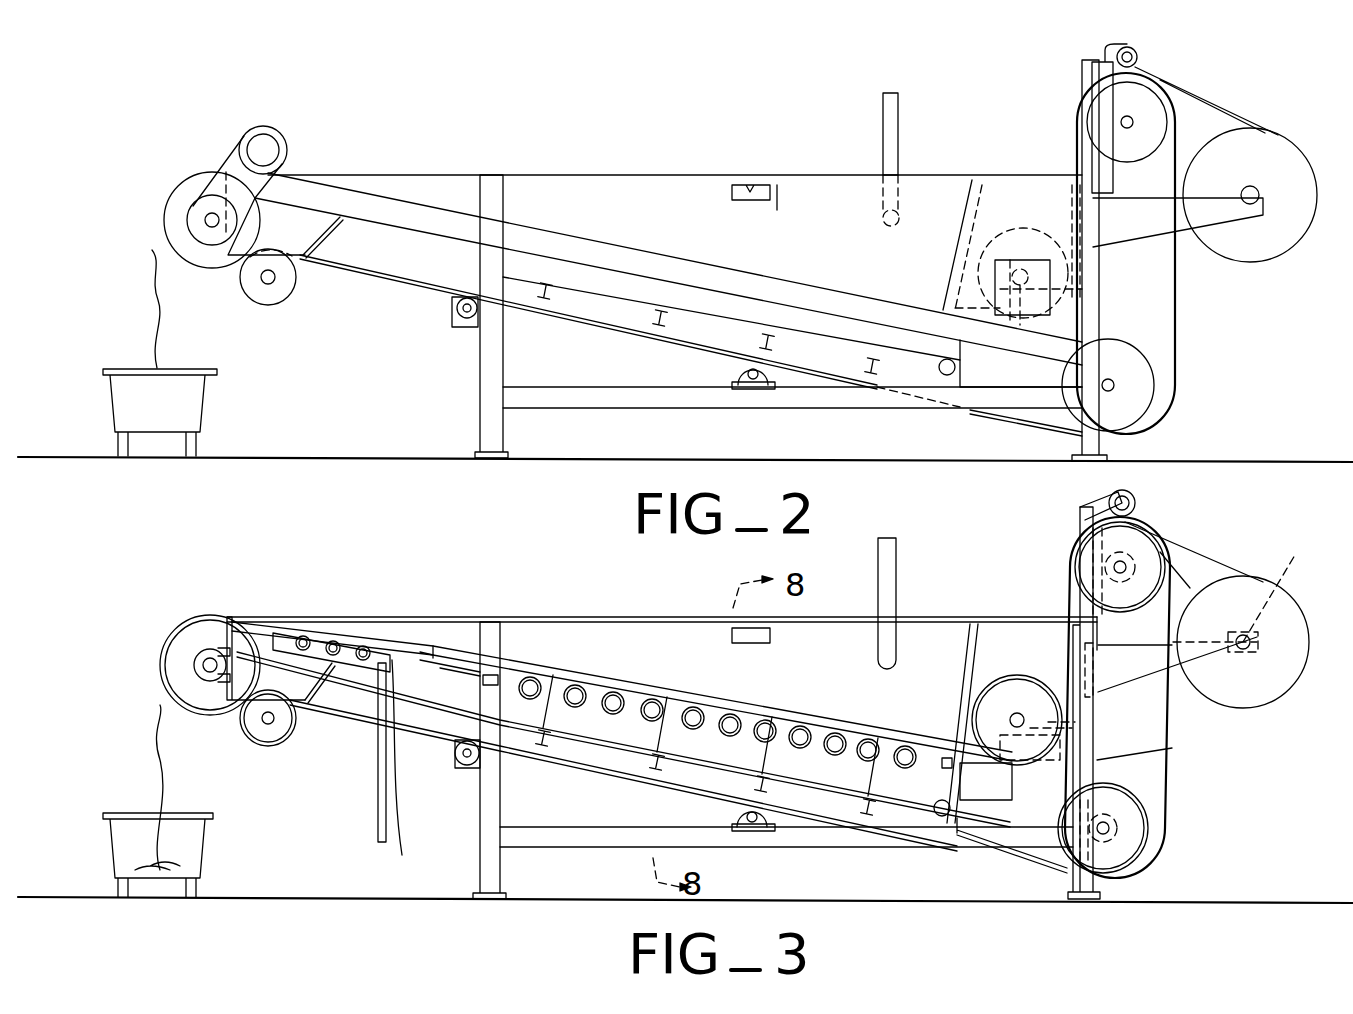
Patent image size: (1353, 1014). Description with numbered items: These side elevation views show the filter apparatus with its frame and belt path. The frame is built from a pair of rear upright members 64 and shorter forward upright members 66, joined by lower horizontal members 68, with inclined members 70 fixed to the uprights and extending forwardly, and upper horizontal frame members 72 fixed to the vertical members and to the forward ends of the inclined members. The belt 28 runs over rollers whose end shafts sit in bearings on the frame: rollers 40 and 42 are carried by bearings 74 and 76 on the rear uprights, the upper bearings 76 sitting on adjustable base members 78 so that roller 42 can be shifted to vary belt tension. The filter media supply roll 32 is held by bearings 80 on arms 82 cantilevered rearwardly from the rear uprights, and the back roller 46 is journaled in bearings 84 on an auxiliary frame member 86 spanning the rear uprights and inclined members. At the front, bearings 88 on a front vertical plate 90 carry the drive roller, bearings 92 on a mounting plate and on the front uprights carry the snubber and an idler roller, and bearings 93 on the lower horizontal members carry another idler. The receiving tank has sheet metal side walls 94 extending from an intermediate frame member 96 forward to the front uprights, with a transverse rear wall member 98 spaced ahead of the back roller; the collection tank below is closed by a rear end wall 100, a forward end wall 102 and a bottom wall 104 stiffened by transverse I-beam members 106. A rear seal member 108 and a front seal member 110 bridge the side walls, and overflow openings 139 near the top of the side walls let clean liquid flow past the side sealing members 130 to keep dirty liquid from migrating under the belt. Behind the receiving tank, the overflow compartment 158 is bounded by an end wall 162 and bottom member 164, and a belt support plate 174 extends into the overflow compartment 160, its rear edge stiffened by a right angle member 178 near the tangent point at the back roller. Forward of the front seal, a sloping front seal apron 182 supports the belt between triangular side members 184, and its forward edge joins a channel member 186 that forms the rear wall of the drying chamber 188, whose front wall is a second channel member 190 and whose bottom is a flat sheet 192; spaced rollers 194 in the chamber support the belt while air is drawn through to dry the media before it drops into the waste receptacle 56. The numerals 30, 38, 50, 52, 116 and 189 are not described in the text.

In FIG. 2, the belt 28 is at (1172, 298).
In FIG. 3, the belt 28 is at (1165, 760).
In FIG. 3, the drive belt 30 is at (1235, 568).
In FIG. 2, the filter media supply roll 32 is at (1300, 245).
In FIG. 3, the filter media supply roll 32 is at (1305, 668).
In FIG. 2, the feed pipe 38 is at (883, 110).
In FIG. 3, the feed pipe 38 is at (896, 588).
In FIG. 3, the roller 40 is at (1133, 822).
In FIG. 3, the roller 42 is at (1152, 558).
In FIG. 3, the back roller 46 is at (1025, 675).
In FIG. 2, the idler pulley 50 is at (275, 130).
In FIG. 2, the swing arm 52 is at (232, 163).
In FIG. 3, the waste receptacle 56 is at (210, 851).
In FIG. 2, the rear upright members 64 is at (1097, 318).
In FIG. 3, the rear upright members 64 is at (1084, 703).
In FIG. 2, the forward upright members 66 is at (478, 375).
In FIG. 3, the forward upright members 66 is at (489, 760).
In FIG. 2, the lower horizontal members 68 is at (596, 398).
In FIG. 3, the lower horizontal members 68 is at (786, 837).
In FIG. 2, the inclined members 70 is at (652, 268).
In FIG. 3, the upper horizontal frame members 72 is at (620, 616).
In FIG. 3, the bearings 74 is at (1152, 855).
In FIG. 3, the bearings 76 is at (1165, 585).
In FIG. 2, the adjustable base members 78 is at (1112, 100).
In FIG. 3, the adjustable base members 78 is at (1112, 545).
In FIG. 3, the bearings 80 is at (1253, 633).
In FIG. 2, the arms 82 is at (1185, 235).
In FIG. 3, the arms 82 is at (1140, 662).
In FIG. 2, the bearings 84 is at (992, 236).
In FIG. 2, the auxiliary frame member 86 is at (1068, 258).
In FIG. 3, the bearings 88 is at (205, 612).
In FIG. 3, the front vertical plate 90 is at (237, 705).
In FIG. 3, the bearings 92 is at (268, 735).
In FIG. 3, the bearings 93 is at (752, 832).
In FIG. 2, the side walls 94 is at (777, 208).
In FIG. 3, the side walls 94 is at (305, 710).
In FIG. 2, the intermediate frame member 96 is at (955, 185).
In FIG. 3, the rear wall member 98 is at (963, 640).
In FIG. 3, the rear end wall 100 is at (1045, 777).
In FIG. 3, the forward end wall 102 is at (505, 695).
In FIG. 3, the bottom wall 104 is at (600, 728).
In FIG. 2, the I-beam members 106 is at (546, 308).
In FIG. 3, the I-beam members 106 is at (540, 748).
In FIG. 3, the rear seal member 108 is at (938, 766).
In FIG. 3, the front seal member 110 is at (478, 687).
In FIG. 3, the track bracket 116 is at (770, 752).
In FIG. 3, the side sealing members 130 is at (620, 680).
In FIG. 2, the overflow openings 139 is at (735, 182).
In FIG. 3, the overflow openings 139 is at (768, 634).
In FIG. 3, the overflow compartment 158 is at (1055, 772).
In FIG. 3, the overflow compartment 160 is at (1038, 640).
In FIG. 3, the end wall 162 is at (1097, 772).
In FIG. 3, the bottom member 164 is at (1060, 775).
In FIG. 3, the belt support plate 174 is at (980, 762).
In FIG. 3, the right angle member 178 is at (1000, 834).
In FIG. 3, the front seal apron 182 is at (445, 684).
In FIG. 2, the triangular shaped vertical side members 184 is at (402, 202).
In FIG. 3, the channel member 186 is at (400, 777).
In FIG. 3, the drying chamber 188 is at (318, 645).
In FIG. 3, the cover 189 is at (408, 630).
In FIG. 3, the channel member 190 is at (297, 633).
In FIG. 3, the flat sheet 192 is at (360, 667).
In FIG. 3, the rollers 194 is at (345, 650).